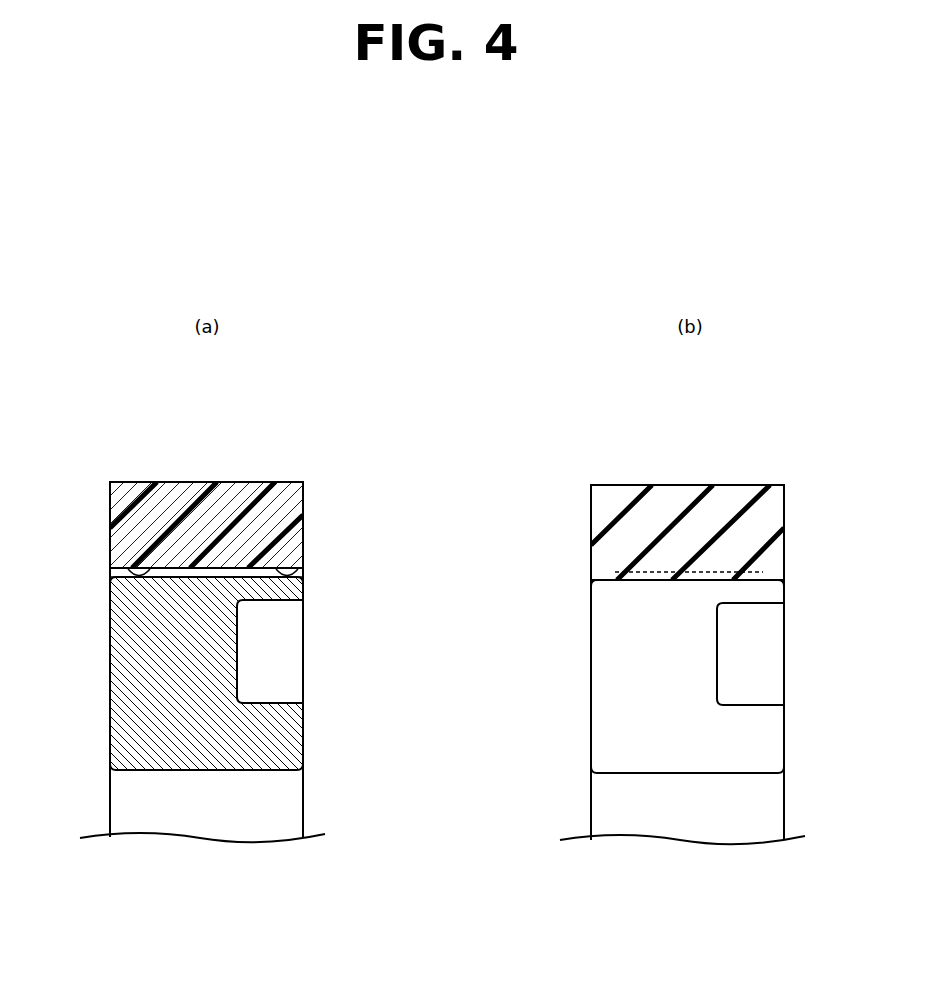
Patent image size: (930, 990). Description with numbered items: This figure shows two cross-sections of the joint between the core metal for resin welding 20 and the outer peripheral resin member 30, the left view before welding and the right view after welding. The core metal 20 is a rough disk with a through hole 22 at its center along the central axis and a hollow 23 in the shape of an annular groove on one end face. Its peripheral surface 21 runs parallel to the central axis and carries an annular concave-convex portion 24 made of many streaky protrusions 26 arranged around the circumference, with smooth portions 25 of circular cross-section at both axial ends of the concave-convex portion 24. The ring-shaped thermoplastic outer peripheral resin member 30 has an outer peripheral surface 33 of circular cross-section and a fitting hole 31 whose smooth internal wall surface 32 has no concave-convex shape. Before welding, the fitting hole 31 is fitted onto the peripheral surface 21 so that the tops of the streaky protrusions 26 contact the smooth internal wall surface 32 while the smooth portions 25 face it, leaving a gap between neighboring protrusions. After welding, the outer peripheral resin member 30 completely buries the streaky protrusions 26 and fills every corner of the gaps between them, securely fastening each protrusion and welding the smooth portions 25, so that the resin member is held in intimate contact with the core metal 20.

The core metal for resin welding 20 is at (110, 686).
The peripheral surface 21 is at (208, 560).
The through hole 22 is at (138, 770).
The hollow 23 is at (276, 600).
The concave-convex portion 24 is at (245, 562).
The smooth portions 25 is at (110, 566).
The streaky protrusions 26 is at (230, 562).
The outer peripheral resin member 30 is at (150, 482).
The fitting hole 31 is at (160, 574).
The smooth internal wall surface 32 is at (183, 570).
The outer peripheral surface 33 is at (192, 482).